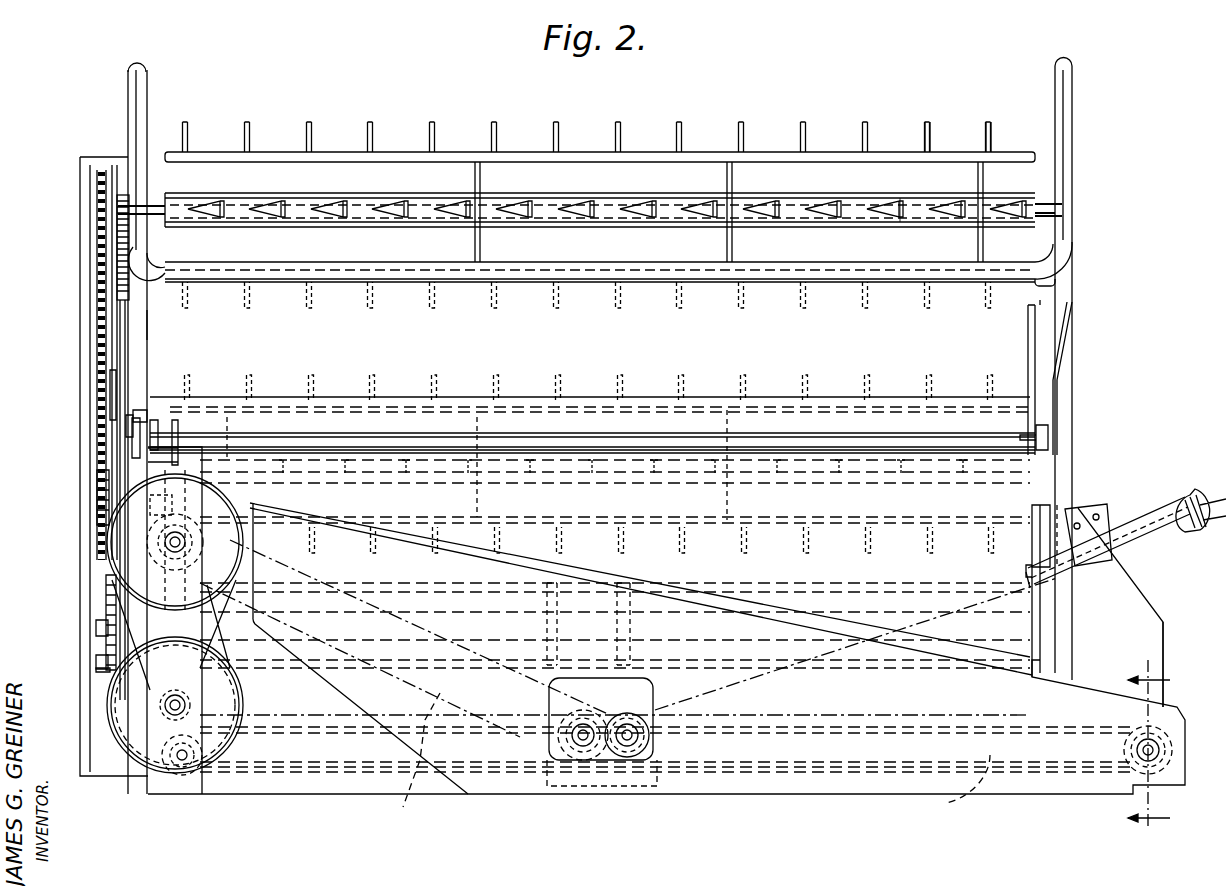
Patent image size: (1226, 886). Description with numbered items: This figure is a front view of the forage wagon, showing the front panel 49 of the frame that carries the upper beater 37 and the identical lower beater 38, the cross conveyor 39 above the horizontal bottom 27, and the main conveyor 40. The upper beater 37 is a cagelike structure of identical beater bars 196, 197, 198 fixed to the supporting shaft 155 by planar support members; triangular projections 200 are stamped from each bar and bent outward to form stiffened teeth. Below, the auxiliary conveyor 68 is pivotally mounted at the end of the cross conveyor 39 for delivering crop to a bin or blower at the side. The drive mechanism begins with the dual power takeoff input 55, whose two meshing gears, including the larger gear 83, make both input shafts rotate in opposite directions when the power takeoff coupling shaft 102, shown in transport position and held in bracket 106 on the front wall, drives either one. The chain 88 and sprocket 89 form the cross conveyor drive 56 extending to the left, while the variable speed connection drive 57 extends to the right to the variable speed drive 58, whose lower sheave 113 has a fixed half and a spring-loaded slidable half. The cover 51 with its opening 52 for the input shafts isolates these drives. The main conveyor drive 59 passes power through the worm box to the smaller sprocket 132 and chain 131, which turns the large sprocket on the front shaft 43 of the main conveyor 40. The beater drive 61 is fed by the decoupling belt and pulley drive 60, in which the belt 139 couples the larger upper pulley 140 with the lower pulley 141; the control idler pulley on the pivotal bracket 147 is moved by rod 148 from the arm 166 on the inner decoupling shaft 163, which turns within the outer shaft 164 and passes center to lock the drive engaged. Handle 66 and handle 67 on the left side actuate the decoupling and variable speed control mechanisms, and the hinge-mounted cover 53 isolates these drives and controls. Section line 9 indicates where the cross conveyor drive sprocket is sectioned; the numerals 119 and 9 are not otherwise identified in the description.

The upper pulley 140 is at (122, 195).
The beater drive 61 is at (88, 237).
The upper beater 37 is at (330, 160).
The projections 200 is at (497, 128).
The beater bar 196 is at (965, 150).
The beater bar 197 is at (925, 200).
The supporting shaft 155 is at (1045, 205).
The beater bar 198 is at (905, 285).
The front panel 49 is at (1040, 296).
The handle 67 is at (1028, 332).
The handle 66 is at (1068, 342).
The inner decoupling shaft 163 is at (1048, 434).
The bracket 106 is at (1080, 522).
The power takeoff coupling shaft 102 is at (1170, 503).
The horizontal bottom 27 is at (1133, 571).
The auxiliary conveyor 68 is at (1163, 622).
The section line 9- 9 is at (1163, 747).
The sprocket 89 is at (1115, 798).
The outer shaft 164 is at (530, 397).
The lower beater 38 is at (318, 397).
The pin 119 is at (177, 430).
The rod 148 is at (140, 412).
The decoupling belt and pulley drive 60 is at (151, 328).
The belt 139 is at (118, 393).
The bracket 147 is at (128, 430).
The arm 166 is at (152, 452).
The hinge-mounted cover 53 is at (82, 491).
The lower pulley 141 is at (150, 500).
The variable speed drive 58 is at (95, 570).
The lower sheave 113 is at (130, 758).
The main conveyor drive 59 is at (92, 606).
The front shaft 43 is at (97, 630).
The chain 131 is at (98, 652).
The smaller sprocket 132 is at (100, 672).
The cover 51 is at (450, 788).
The variable speed connection drive 57 is at (402, 760).
The dual power takeoff input 55 is at (560, 785).
The opening 52 is at (602, 758).
The gear 83 is at (666, 748).
The chain 88 is at (765, 713).
The cross conveyor drive 56 is at (705, 788).
The cross conveyor 39 is at (800, 788).
The main conveyor 40 is at (666, 774).